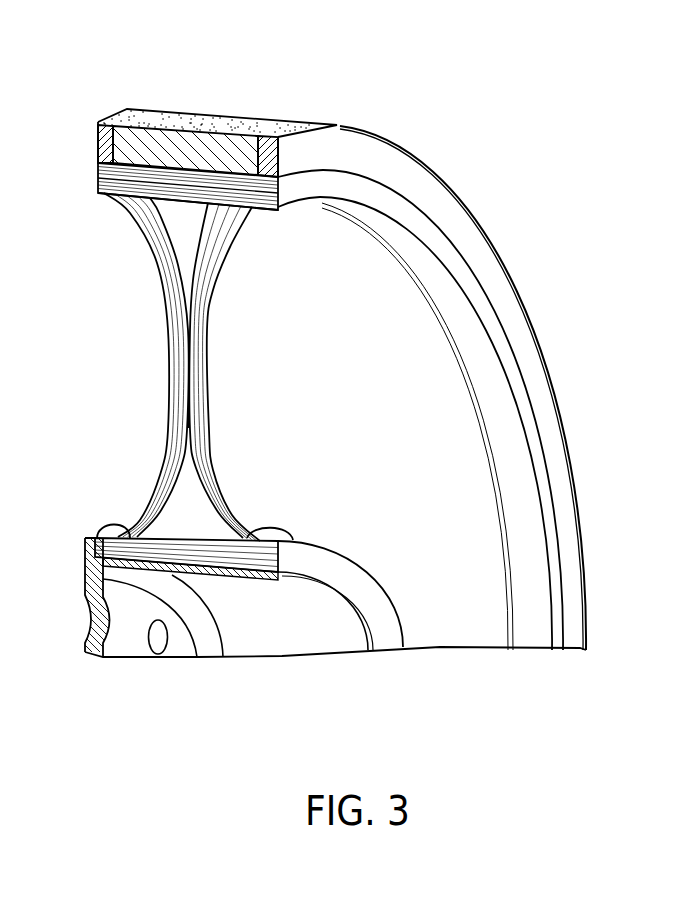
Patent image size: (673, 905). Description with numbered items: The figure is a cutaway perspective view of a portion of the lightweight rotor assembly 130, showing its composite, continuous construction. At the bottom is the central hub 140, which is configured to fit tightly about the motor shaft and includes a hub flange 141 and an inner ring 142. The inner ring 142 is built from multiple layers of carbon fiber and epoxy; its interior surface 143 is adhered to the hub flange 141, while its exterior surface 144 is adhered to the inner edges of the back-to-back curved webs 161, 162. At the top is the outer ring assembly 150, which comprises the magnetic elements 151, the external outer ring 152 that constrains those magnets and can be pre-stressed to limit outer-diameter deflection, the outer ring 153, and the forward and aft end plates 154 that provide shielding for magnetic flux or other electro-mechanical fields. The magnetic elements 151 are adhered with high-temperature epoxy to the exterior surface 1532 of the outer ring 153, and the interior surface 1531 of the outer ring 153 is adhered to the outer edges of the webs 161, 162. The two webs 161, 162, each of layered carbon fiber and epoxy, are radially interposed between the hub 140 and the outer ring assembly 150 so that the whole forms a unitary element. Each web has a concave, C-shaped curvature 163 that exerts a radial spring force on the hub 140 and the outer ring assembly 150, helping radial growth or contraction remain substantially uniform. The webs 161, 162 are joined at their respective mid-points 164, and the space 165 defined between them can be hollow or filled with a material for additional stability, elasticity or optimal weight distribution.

The rotor assembly 130 is at (597, 660).
The central hub 140 is at (193, 582).
The hub flange 141 is at (127, 645).
The inner ring 142 is at (105, 573).
The interior surface 143 is at (257, 577).
The exterior surface 144 is at (100, 527).
The outer ring assembly 150 is at (88, 132).
The magnetic elements 151 is at (167, 140).
The external outer ring 152 is at (257, 125).
The outer ring 153 is at (98, 178).
The forward and aft end plates 154 is at (98, 122).
The back-to-back curved web 161 is at (173, 327).
The back-to-back curved web 162 is at (202, 430).
The concave curvature 163 is at (182, 306).
The mid-points 164 is at (183, 370).
The space 165 is at (200, 228).
The interior surface 1531 is at (132, 178).
The exterior surface 1532 is at (98, 163).